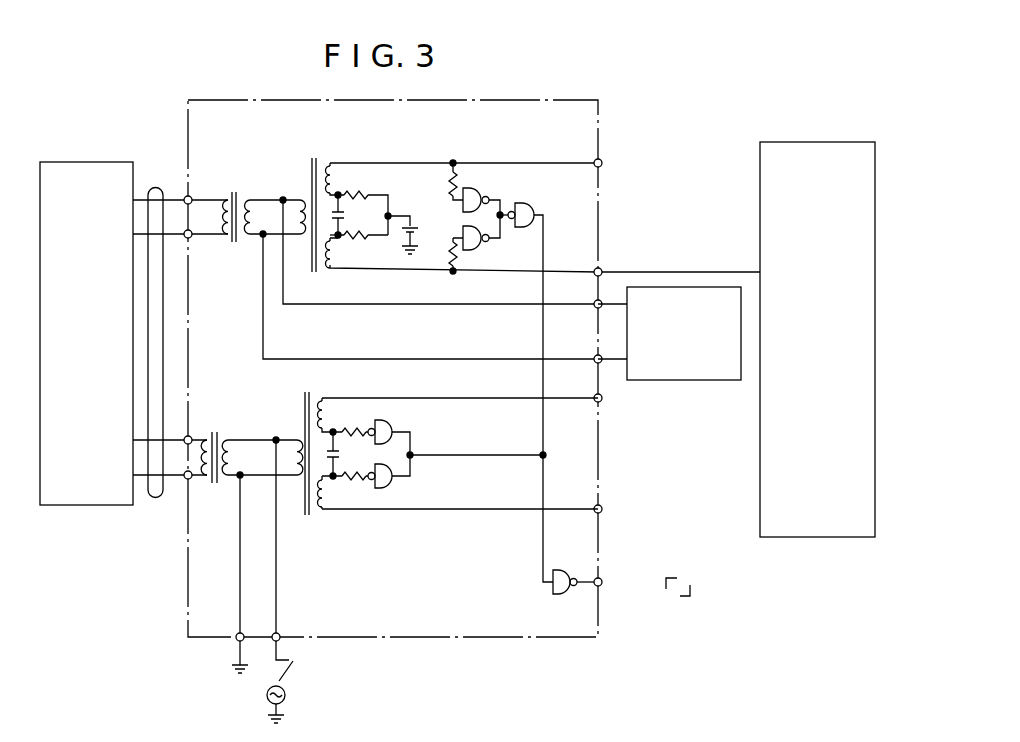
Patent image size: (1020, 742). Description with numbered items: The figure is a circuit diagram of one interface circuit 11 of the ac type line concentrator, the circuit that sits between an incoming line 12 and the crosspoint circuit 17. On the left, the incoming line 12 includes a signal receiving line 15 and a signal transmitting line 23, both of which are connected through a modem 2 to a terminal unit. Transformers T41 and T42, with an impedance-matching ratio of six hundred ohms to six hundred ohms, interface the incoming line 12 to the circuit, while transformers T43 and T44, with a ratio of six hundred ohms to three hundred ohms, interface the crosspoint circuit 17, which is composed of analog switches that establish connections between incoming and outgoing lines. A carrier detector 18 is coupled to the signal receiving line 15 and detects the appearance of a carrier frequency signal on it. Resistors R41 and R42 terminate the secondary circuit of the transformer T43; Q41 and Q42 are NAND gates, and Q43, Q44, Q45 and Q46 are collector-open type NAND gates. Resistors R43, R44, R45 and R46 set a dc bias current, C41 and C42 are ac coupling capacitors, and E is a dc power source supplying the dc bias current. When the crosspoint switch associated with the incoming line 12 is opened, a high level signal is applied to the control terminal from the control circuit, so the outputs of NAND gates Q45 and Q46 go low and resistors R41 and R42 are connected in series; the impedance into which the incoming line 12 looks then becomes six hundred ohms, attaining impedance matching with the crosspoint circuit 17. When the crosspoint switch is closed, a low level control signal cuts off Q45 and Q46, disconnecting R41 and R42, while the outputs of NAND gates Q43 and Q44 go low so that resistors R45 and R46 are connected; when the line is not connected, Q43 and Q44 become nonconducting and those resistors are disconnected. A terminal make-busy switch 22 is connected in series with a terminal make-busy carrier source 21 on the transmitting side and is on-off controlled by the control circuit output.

The modem 2 is at (76, 162).
The interface circuit 11 is at (602, 140).
The incoming line 12 is at (156, 185).
The signal receiving line 15 is at (178, 196).
The signal transmitting line 23 is at (183, 439).
The crosspoint circuit 17 is at (773, 142).
The carrier detector 18 is at (673, 287).
The terminal make-busy carrier source 21 is at (286, 699).
The terminal make-busy switch 22 is at (290, 679).
The transformer T41 is at (258, 207).
The transformer T42 is at (226, 428).
The transformer T43 is at (530, 206).
The transformer T44 is at (442, 442).
The resistor R41 is at (440, 180).
The resistor R42 is at (442, 254).
The resistor R43 is at (363, 203).
The resistor R44 is at (363, 249).
The resistor R45 is at (351, 421).
The resistor R46 is at (350, 490).
The ac coupling capacitor C41 is at (353, 215).
The ac coupling capacitor C42 is at (350, 454).
The dc power source E is at (407, 228).
The NAND gate Q41 is at (553, 594).
The NAND gate Q42 is at (539, 218).
The collector-open type NAND gate Q43 is at (391, 426).
The collector-open type NAND gate Q44 is at (396, 486).
The collector-open type NAND gate Q45 is at (472, 192).
The collector-open type NAND gate Q46 is at (486, 248).